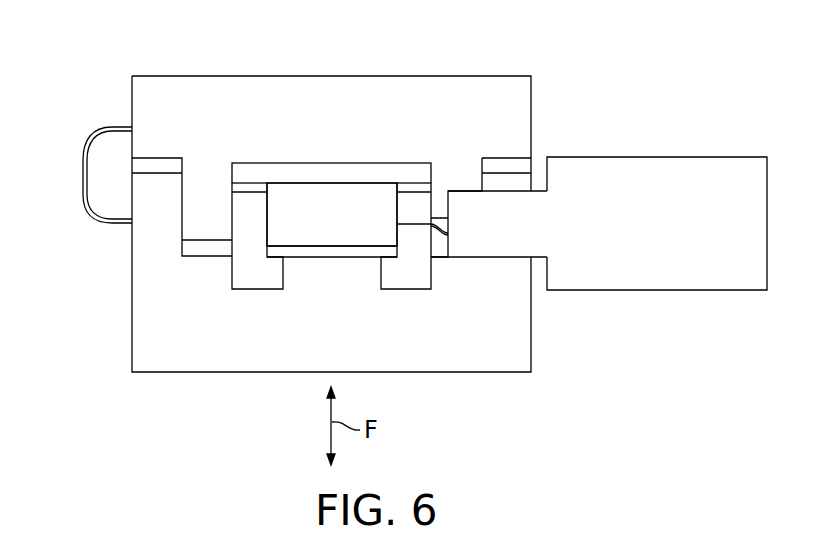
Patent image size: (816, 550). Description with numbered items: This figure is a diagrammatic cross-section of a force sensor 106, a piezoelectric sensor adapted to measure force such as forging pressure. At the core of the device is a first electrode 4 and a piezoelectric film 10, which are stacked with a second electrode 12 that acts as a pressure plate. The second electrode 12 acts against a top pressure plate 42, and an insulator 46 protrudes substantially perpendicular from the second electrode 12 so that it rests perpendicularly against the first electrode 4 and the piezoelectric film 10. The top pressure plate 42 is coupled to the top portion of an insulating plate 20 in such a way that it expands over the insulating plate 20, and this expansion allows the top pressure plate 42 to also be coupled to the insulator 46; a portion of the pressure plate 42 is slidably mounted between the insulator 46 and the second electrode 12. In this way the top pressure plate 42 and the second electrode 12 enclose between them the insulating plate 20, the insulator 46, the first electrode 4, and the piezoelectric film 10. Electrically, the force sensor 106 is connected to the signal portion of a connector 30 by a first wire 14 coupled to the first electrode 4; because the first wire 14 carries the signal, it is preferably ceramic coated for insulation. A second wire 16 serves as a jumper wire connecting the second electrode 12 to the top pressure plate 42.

The first electrode 4 is at (307, 190).
The piezoelectric film 10 is at (320, 258).
The second electrode 12 is at (130, 333).
The first wire 14 is at (413, 223).
The second wire 16 is at (82, 183).
The insulating plate 20 is at (348, 162).
The connector 30 is at (645, 292).
The top pressure plate 42 is at (132, 97).
The insulator 46 is at (232, 290).
The force sensor 106 is at (620, 113).